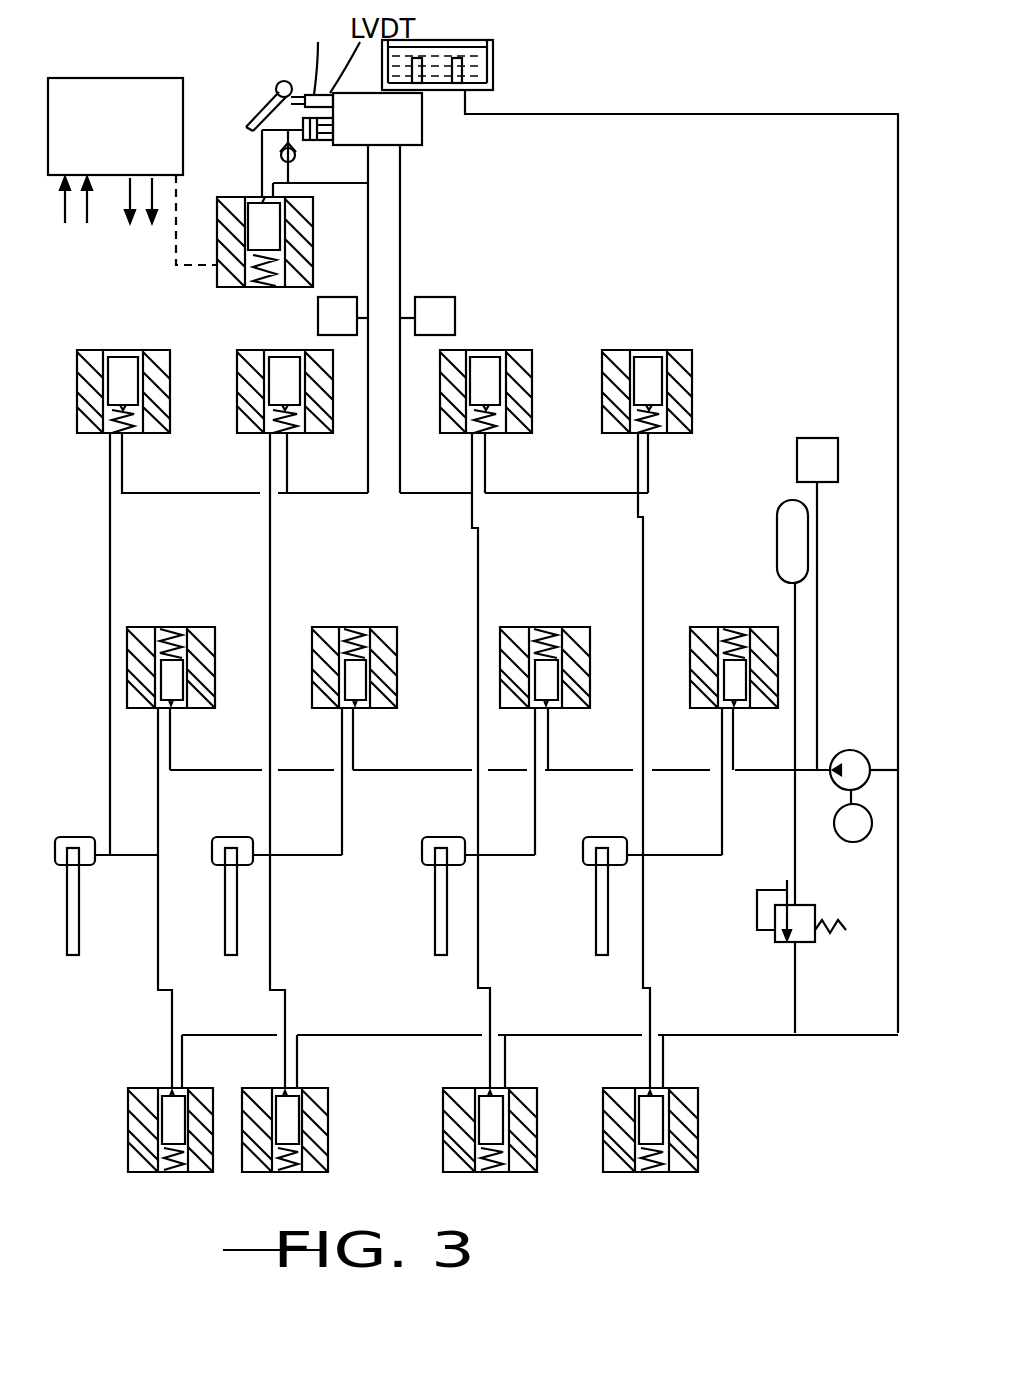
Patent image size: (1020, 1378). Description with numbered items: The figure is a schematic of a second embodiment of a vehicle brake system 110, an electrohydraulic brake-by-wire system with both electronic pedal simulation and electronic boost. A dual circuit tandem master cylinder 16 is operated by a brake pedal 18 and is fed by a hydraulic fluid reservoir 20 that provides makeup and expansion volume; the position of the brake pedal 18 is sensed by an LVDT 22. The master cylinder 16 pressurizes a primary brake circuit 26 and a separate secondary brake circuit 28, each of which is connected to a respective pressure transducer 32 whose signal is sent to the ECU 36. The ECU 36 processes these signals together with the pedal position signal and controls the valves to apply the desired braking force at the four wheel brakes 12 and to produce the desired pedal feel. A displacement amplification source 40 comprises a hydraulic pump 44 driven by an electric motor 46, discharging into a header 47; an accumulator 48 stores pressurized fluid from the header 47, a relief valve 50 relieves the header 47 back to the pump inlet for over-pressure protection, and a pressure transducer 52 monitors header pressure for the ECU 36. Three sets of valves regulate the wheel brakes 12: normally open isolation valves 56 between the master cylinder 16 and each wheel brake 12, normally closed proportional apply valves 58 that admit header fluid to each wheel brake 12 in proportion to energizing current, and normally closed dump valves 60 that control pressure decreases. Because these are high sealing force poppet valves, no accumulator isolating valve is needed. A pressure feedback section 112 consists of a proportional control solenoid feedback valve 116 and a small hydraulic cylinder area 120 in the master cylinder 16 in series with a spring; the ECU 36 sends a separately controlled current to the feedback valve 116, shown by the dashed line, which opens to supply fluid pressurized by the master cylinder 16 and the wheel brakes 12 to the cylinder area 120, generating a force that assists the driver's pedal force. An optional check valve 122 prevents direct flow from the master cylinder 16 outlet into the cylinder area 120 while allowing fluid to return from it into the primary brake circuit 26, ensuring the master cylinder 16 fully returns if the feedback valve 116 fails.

The wheel brake 12 is at (70, 838).
The tandem master cylinder 16 is at (425, 132).
The brake pedal 18 is at (250, 112).
The hydraulic fluid reservoir 20 is at (497, 60).
The LVDT 22 is at (315, 53).
The primary brake circuit 26 is at (340, 498).
The secondary brake circuit 28 is at (530, 497).
The pressure transducer 32 is at (340, 297).
The ECU 36 is at (130, 78).
The displacement amplification source 40 is at (805, 644).
The hydraulic pump 44 is at (850, 749).
The electric motor 46 is at (853, 842).
The header 47 is at (773, 773).
The accumulator 48 is at (785, 500).
The relief valve 50 is at (816, 942).
The pressure transducer 52 is at (820, 438).
The isolation valve 56 is at (95, 336).
The apply valve 58 is at (212, 627).
The dump valve 60 is at (145, 1175).
The brake system 110 is at (690, 93).
The pressure feedback section 112 is at (300, 74).
The feedback valve 116 is at (217, 220).
The hydraulic cylinder area 120 is at (334, 148).
The check valve 122 is at (262, 150).